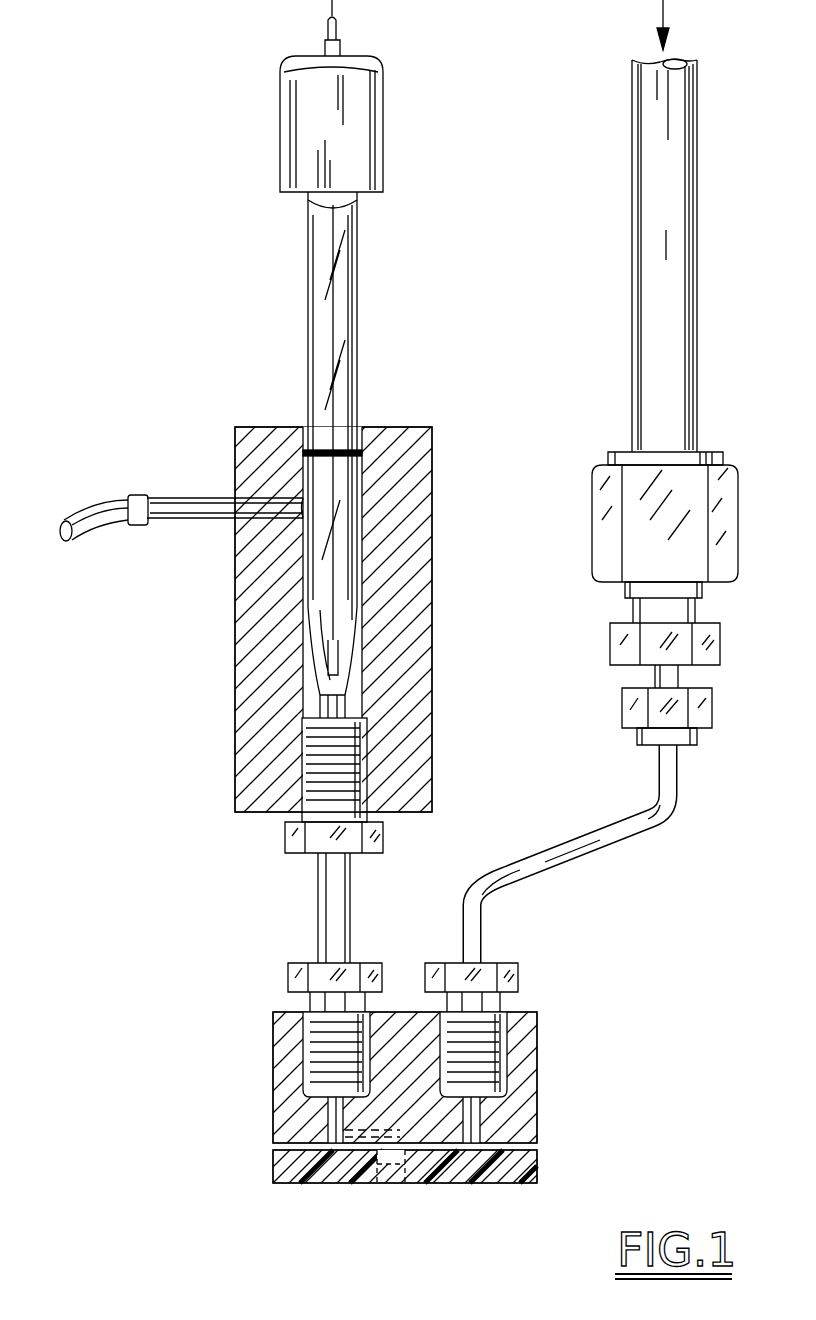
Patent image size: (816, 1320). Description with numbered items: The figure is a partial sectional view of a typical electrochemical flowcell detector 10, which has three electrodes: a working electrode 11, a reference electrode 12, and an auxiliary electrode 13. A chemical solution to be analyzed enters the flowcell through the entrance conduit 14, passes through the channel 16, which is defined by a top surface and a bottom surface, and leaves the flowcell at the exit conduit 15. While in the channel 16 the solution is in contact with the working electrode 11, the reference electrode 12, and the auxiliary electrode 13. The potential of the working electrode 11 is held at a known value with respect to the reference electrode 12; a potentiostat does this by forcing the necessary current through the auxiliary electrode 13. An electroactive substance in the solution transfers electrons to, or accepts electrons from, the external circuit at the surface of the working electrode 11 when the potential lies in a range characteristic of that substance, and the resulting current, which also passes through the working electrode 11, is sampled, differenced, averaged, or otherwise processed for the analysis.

The electrochemical flowcell detector 10 is at (186, 72).
The working electrode 11 is at (348, 1185).
The reference electrode 12 is at (372, 148).
The auxiliary electrode 13 is at (200, 522).
The entrance conduit 14 is at (670, 148).
The exit conduit 15 is at (105, 498).
The channel 16 is at (537, 1147).